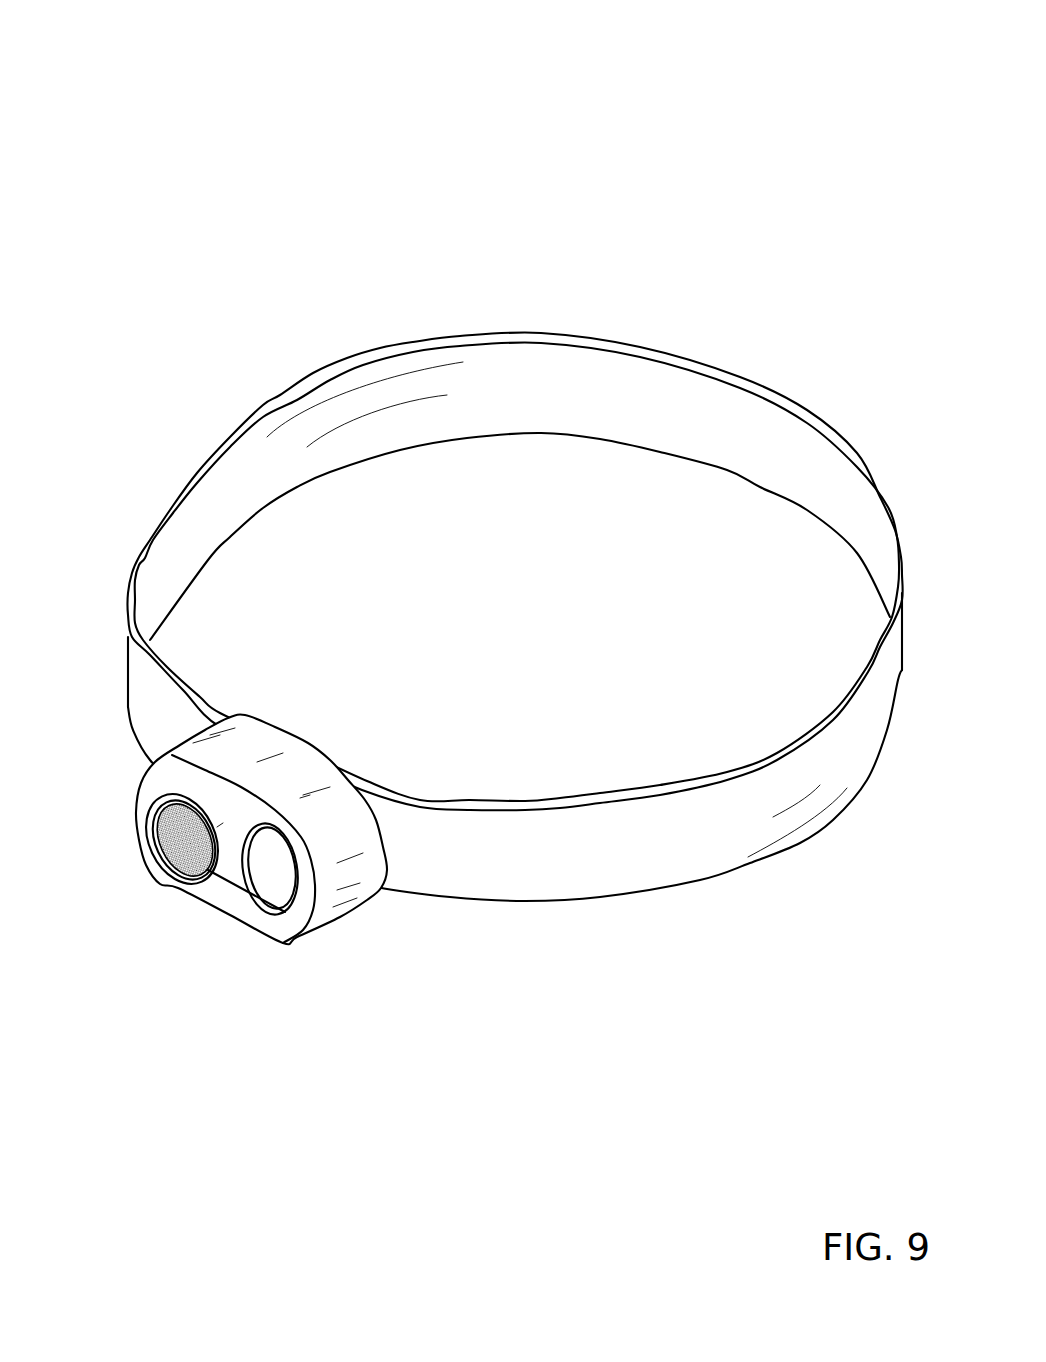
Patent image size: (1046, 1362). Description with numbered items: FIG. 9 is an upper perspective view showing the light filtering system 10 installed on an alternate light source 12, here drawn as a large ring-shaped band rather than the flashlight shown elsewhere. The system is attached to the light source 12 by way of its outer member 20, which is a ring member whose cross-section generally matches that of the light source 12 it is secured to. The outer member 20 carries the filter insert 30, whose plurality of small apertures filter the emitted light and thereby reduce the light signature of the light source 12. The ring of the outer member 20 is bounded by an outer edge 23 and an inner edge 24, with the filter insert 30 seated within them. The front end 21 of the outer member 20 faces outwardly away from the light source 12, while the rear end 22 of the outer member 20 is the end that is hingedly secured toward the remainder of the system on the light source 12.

The light filtering system 10 is at (484, 532).
The light source 12 is at (333, 920).
The outer member 20 is at (226, 879).
The front end 21 is at (184, 884).
The rear end 22 is at (241, 885).
The outer edge 23 is at (170, 793).
The inner edge 24 is at (183, 880).
The filter insert 30 is at (179, 847).